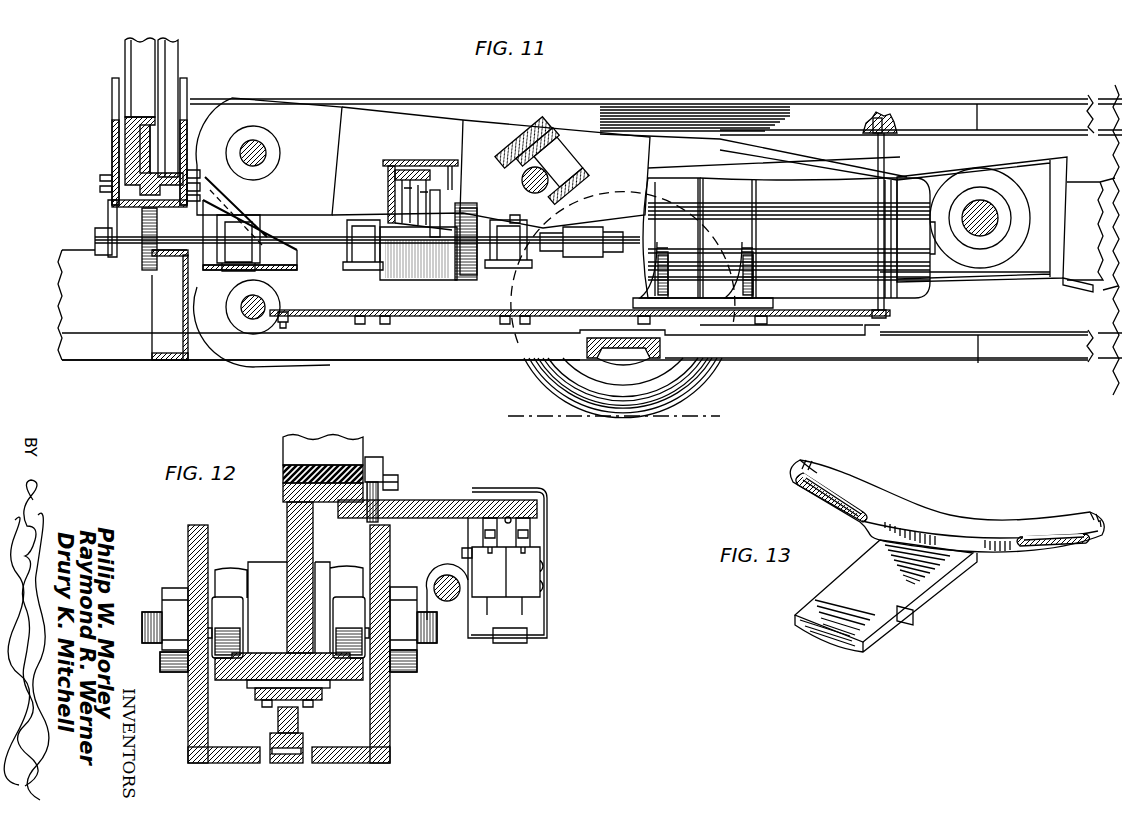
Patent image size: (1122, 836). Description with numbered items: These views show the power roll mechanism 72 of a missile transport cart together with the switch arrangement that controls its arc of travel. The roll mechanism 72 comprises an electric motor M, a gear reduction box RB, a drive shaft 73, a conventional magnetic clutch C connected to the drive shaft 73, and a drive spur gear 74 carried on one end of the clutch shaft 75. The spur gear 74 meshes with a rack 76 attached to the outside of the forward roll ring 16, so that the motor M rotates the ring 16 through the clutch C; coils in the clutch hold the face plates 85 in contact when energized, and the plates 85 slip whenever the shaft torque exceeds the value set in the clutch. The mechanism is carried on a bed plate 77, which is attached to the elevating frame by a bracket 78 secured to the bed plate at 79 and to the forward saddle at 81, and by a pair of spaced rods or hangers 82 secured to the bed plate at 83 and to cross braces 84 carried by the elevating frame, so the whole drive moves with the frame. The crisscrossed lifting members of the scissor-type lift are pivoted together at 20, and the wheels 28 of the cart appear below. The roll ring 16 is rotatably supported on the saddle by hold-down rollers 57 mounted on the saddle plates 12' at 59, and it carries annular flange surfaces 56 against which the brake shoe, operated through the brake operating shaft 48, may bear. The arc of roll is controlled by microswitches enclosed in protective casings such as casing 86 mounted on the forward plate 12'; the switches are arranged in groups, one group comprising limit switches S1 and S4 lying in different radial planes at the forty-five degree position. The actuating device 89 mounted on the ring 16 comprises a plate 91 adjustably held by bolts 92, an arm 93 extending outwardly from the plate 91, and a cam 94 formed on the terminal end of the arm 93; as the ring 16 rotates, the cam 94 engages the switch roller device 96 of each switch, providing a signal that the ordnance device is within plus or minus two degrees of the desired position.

In FIG. 11, the plate 12' is at (148, 130).
In FIG. 12, the plate 12' is at (294, 644).
In FIG. 11, the roll ring 16 is at (138, 140).
In FIG. 12, the roll ring 16 is at (285, 523).
In FIG. 11, the pivot 20 is at (985, 240).
In FIG. 11, the wheels 28 is at (643, 418).
In FIG. 12, the brake operating shaft 48 is at (447, 602).
In FIG. 12, the annular flange surface 56 is at (230, 658).
In FIG. 12, the hold-down roller 57 is at (225, 597).
In FIG. 12, the roller support 59 is at (155, 610).
In FIG. 11, the missile cart roll mechanism 72 is at (370, 130).
In FIG. 11, the drive shaft 73 is at (545, 235).
In FIG. 11, the drive spur gear 74 is at (146, 270).
In FIG. 11, the clutch shaft 75 is at (300, 240).
In FIG. 11, the rack 76 is at (140, 214).
In FIG. 12, the rack 76 is at (285, 765).
In FIG. 11, the bed plate 77 is at (475, 318).
In FIG. 11, the bracket 78 is at (222, 270).
In FIG. 11, the bracket securing point 79 is at (283, 328).
In FIG. 11, the saddle securing point 81 is at (205, 190).
In FIG. 11, the hanger rod 82 is at (877, 238).
In FIG. 11, the hanger securing point 83 is at (884, 316).
In FIG. 11, the cross brace 84 is at (893, 133).
In FIG. 11, the clutch face plate 85 is at (427, 220).
In FIG. 12, the switch casing 86 is at (548, 607).
In FIG. 12, the switch actuating device 89 is at (454, 497).
In FIG. 13, the switch actuating device 89 is at (995, 512).
In FIG. 12, the plate 91 is at (370, 457).
In FIG. 13, the plate 91 is at (943, 512).
In FIG. 12, the bolt 92 is at (390, 473).
In FIG. 12, the arm 93 is at (420, 497).
In FIG. 13, the arm 93 is at (858, 567).
In FIG. 12, the cam 94 is at (511, 516).
In FIG. 13, the cam 94 is at (797, 628).
In FIG. 12, the switch roller device 96 is at (528, 533).
In FIG. 11, the magnetic clutch C is at (440, 185).
In FIG. 11, the electric motor M is at (832, 199).
In FIG. 11, the gear reduction box RB is at (682, 199).
In FIG. 12, the limit switch S4 is at (500, 578).
In FIG. 12, the limit switch S1 is at (534, 578).